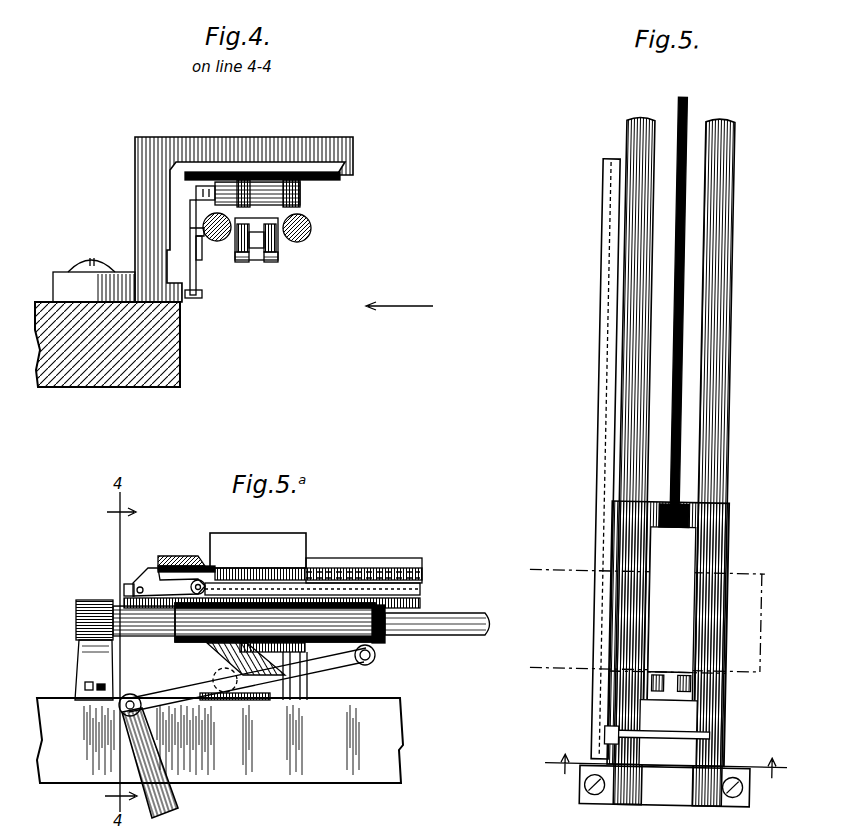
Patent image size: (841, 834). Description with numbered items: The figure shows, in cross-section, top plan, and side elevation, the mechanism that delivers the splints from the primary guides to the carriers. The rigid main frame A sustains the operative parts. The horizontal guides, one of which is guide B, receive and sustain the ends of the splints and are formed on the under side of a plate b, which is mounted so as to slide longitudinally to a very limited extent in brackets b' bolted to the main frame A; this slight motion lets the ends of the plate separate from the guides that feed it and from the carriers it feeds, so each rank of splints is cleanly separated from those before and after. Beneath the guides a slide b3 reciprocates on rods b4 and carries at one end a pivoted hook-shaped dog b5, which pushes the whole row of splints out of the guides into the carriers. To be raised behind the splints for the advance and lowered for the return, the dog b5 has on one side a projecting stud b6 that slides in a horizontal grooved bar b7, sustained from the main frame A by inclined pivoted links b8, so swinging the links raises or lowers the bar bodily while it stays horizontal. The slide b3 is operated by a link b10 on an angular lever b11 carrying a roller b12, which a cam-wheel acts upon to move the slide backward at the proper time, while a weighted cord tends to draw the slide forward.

In FIG. 4, the main frame A is at (107, 344).
In FIG. 5a, the main frame A is at (220, 740).
In FIG. 4, the horizontal guide B is at (170, 179).
In FIG. 5a, the horizontal guide B is at (180, 556).
In FIG. 5a, the plate b is at (364, 561).
In FIG. 4, the bracket b' is at (203, 208).
In FIG. 5a, the bracket b' is at (258, 550).
In FIG. 5, the bracket b' is at (700, 641).
In FIG. 4, the slide b3 is at (284, 213).
In FIG. 5a, the slide b3 is at (230, 650).
In FIG. 5, the slide b3 is at (668, 633).
In FIG. 4, the rod b4 is at (310, 235).
In FIG. 5a, the rod b4 is at (492, 626).
In FIG. 5, the rod b4 is at (628, 433).
In FIG. 4, the hook-shaped dog b5 is at (252, 181).
In FIG. 5a, the hook-shaped dog b5 is at (151, 580).
In FIG. 5, the hook-shaped dog b5 is at (684, 734).
In FIG. 4, the projecting stud b6 is at (203, 194).
In FIG. 5a, the projecting stud b6 is at (125, 590).
In FIG. 5, the projecting stud b6 is at (617, 735).
In FIG. 4, the grooved bar b7 is at (190, 217).
In FIG. 5a, the grooved bar b7 is at (413, 593).
In FIG. 5, the grooved bar b7 is at (606, 251).
In FIG. 4, the pivoted link b8 is at (218, 243).
In FIG. 5a, the pivoted link b8 is at (213, 650).
In FIG. 5a, the link b10 is at (172, 688).
In FIG. 5a, the angular lever b11 is at (176, 803).
In FIG. 5, the roller b12 is at (688, 116).